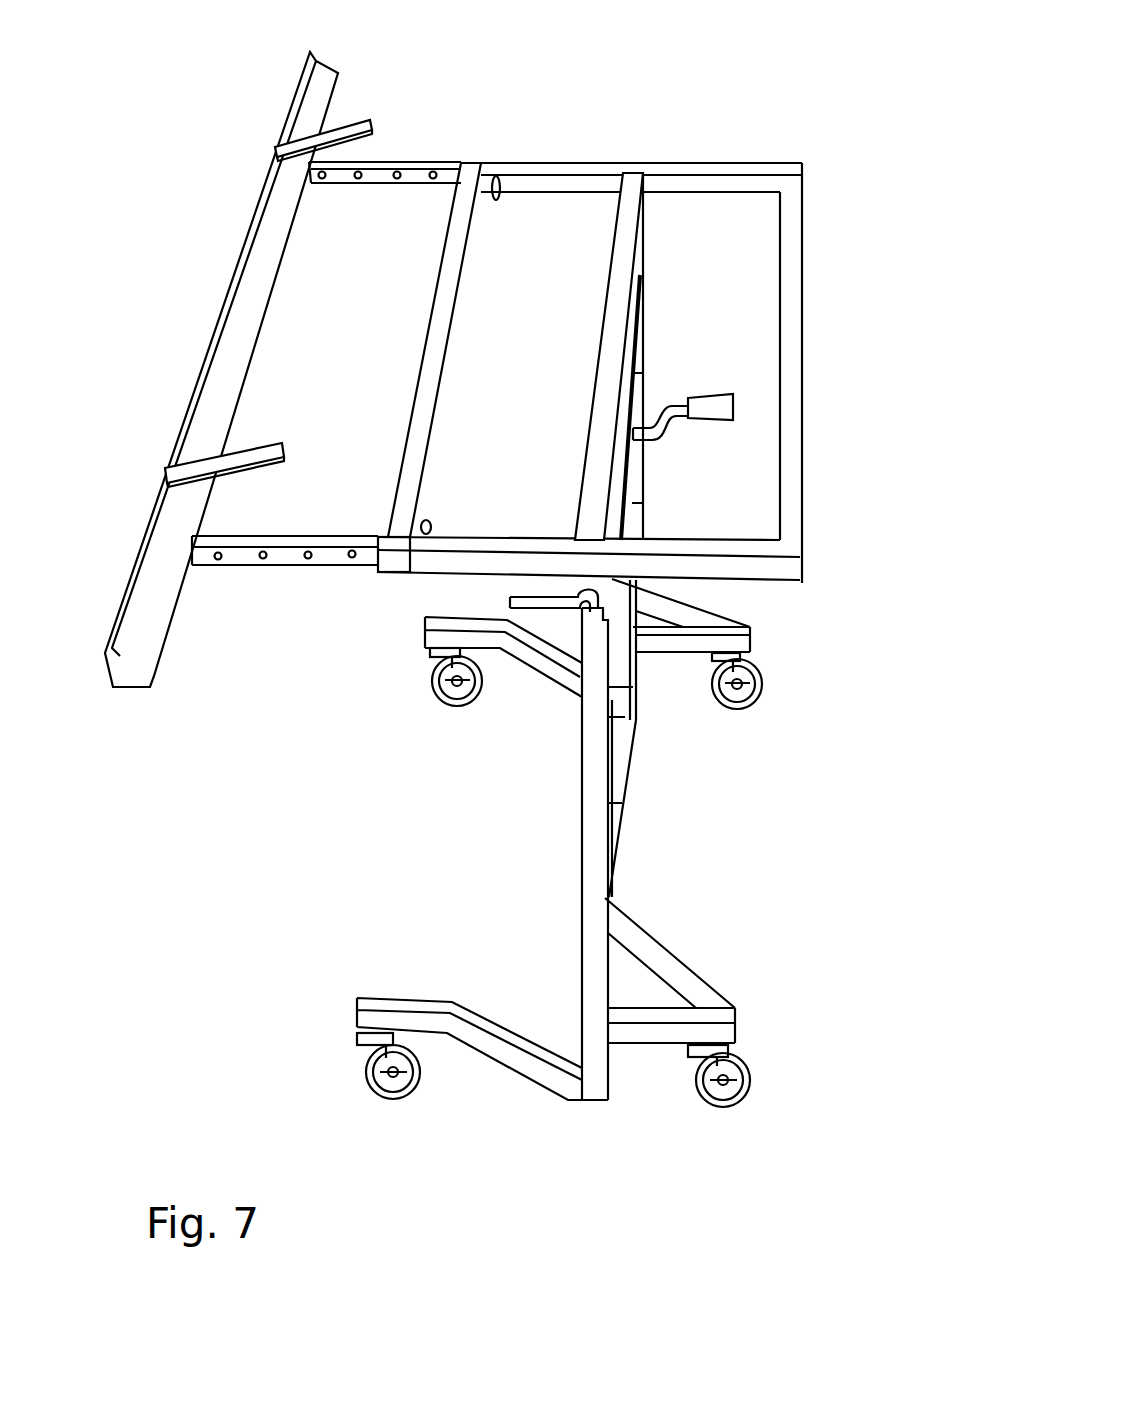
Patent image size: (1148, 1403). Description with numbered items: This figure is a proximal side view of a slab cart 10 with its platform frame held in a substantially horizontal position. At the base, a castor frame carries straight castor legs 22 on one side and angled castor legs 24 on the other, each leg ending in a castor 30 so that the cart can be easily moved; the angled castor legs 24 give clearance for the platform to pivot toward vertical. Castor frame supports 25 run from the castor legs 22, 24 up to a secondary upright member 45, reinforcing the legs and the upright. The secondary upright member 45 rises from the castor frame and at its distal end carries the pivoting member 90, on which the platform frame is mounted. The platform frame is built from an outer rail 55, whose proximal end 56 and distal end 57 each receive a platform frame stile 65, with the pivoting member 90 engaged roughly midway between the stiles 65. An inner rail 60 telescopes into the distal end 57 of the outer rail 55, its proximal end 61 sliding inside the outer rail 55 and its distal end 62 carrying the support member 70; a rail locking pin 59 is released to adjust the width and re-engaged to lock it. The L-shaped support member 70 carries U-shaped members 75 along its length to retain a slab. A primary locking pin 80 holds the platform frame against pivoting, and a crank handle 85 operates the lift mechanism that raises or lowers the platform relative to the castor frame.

The slab cart 10 is at (868, 92).
The straight castor leg 22 is at (622, 1030).
The angled castor leg 24 is at (523, 1066).
The castor frame support 25 is at (680, 940).
The castor 30 is at (412, 1098).
The secondary upright member 45 is at (590, 818).
The outer rail 55 is at (712, 165).
The proximal end of outer rail 56 is at (765, 566).
The distal end of outer rail 57 is at (395, 568).
The rail locking pin 59 is at (500, 185).
The inner rail 60 is at (410, 163).
The proximal end of inner rail 61 is at (216, 562).
The distal end of inner rail 62 is at (354, 558).
The platform frame stile 65 is at (440, 290).
The support member 70 is at (140, 625).
The U-shaped member 75 is at (275, 150).
The primary locking pin 80 is at (510, 601).
The crank handle 85 is at (720, 396).
The pivoting member 90 is at (638, 178).